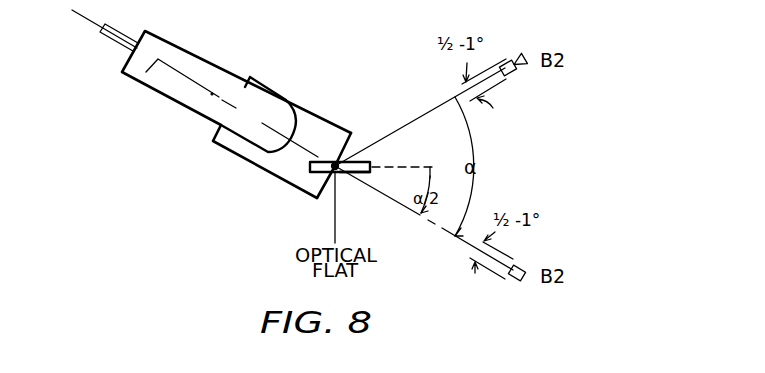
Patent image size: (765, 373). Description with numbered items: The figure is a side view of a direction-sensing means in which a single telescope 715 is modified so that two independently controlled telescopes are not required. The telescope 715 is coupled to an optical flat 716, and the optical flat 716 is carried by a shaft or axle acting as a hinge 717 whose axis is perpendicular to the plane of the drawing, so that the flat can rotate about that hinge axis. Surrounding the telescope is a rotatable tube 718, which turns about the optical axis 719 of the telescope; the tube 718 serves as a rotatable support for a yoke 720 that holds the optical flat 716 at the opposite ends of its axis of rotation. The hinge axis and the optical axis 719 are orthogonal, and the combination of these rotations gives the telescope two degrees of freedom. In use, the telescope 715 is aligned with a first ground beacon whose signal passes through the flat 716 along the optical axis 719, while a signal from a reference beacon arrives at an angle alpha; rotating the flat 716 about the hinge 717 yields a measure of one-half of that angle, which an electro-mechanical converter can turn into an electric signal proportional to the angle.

The telescope 715 is at (178, 90).
The optical flat 716 is at (347, 176).
The shaft or axle (hinge) 717 is at (330, 173).
The rotatable tube 718 is at (285, 102).
The optical axis 719 is at (134, 66).
The yoke 720 is at (345, 158).